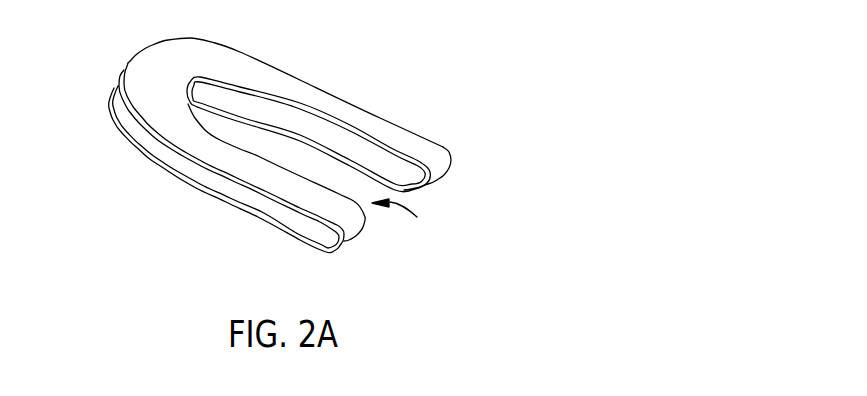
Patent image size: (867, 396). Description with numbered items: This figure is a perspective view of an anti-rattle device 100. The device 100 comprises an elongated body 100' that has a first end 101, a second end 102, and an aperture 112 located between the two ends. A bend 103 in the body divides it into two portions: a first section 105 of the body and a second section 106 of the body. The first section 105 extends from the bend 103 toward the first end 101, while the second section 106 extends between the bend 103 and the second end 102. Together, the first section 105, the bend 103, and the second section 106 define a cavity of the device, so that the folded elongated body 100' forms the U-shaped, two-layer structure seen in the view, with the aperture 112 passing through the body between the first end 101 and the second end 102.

The anti-rattle device 100 is at (284, 137).
The elongated body 100' is at (308, 108).
The first end 101 is at (128, 63).
The second end 102 is at (114, 116).
The bend 103 is at (432, 180).
The first section 105 is at (272, 72).
The second section 106 is at (210, 183).
The aperture 112 is at (410, 214).